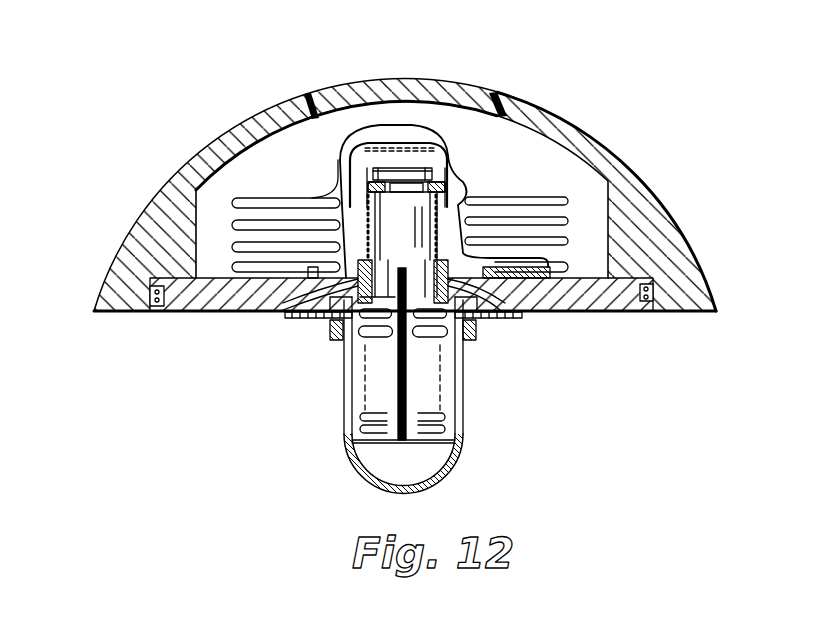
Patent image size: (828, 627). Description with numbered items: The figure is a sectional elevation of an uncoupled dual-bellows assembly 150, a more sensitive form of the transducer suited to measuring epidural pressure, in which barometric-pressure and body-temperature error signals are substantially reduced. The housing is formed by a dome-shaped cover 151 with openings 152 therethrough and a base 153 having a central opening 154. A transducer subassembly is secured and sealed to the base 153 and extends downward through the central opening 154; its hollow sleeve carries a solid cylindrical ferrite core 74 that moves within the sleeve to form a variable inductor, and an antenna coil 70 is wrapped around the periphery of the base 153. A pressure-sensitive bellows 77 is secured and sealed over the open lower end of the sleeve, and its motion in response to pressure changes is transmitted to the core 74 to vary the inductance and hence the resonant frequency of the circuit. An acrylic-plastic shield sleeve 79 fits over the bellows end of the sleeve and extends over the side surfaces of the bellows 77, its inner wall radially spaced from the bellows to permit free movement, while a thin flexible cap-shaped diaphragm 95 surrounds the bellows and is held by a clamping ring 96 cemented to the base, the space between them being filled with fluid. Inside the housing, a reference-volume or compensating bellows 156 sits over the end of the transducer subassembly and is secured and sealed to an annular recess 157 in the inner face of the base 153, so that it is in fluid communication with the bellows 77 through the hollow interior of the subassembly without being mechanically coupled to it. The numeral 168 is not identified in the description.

The uncoupled dual-bellows assembly 150 is at (632, 119).
The dome-shaped cover 151 is at (661, 203).
The openings 152 is at (309, 93).
The base 153 is at (190, 312).
The central opening 154 is at (318, 322).
The reference-volume or compensating bellows 156 is at (471, 182).
The annular recess 157 is at (280, 312).
The cap 168 is at (399, 166).
The antenna coil 70 is at (655, 298).
The solid cylindrical ferrite core 74 is at (418, 248).
The pressure-sensitive bellows 77 is at (362, 412).
The shield sleeve 79 is at (458, 366).
The cap-shaped diaphragm 95 is at (345, 452).
The clamping ring 96 is at (478, 333).